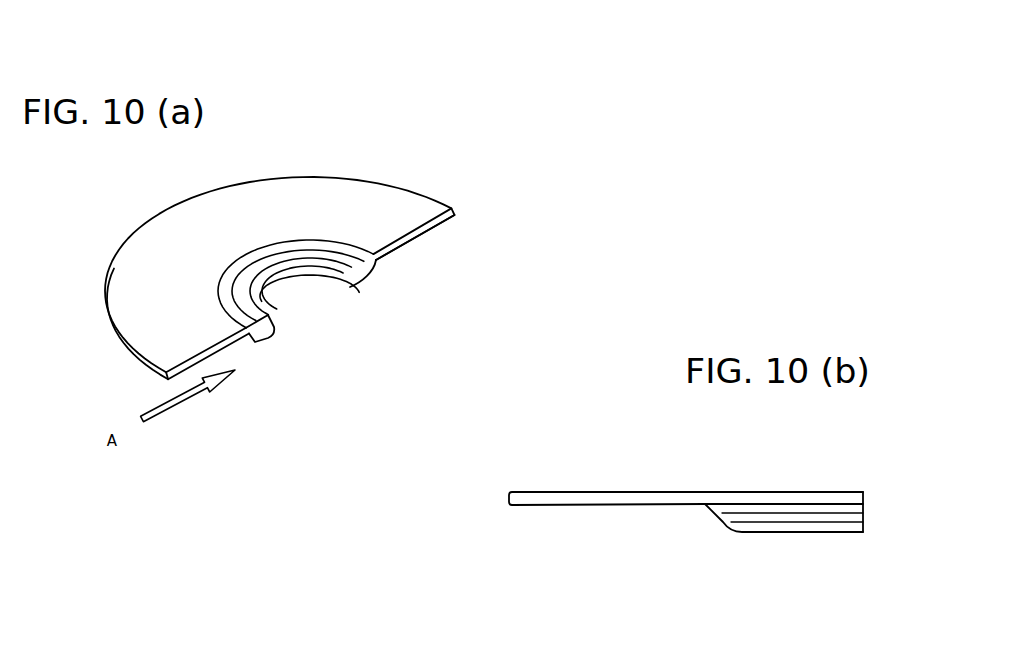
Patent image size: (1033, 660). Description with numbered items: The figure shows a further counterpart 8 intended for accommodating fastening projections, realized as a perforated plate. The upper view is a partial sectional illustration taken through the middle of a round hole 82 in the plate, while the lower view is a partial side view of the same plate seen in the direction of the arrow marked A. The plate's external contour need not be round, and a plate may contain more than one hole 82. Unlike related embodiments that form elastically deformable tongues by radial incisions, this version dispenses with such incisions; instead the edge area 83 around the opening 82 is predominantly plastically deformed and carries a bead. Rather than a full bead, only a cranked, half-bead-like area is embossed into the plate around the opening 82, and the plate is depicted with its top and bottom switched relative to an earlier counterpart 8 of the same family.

The counterpart 8 is at (330, 206).
The hole 82 is at (310, 308).
The edge area 83 is at (395, 263).